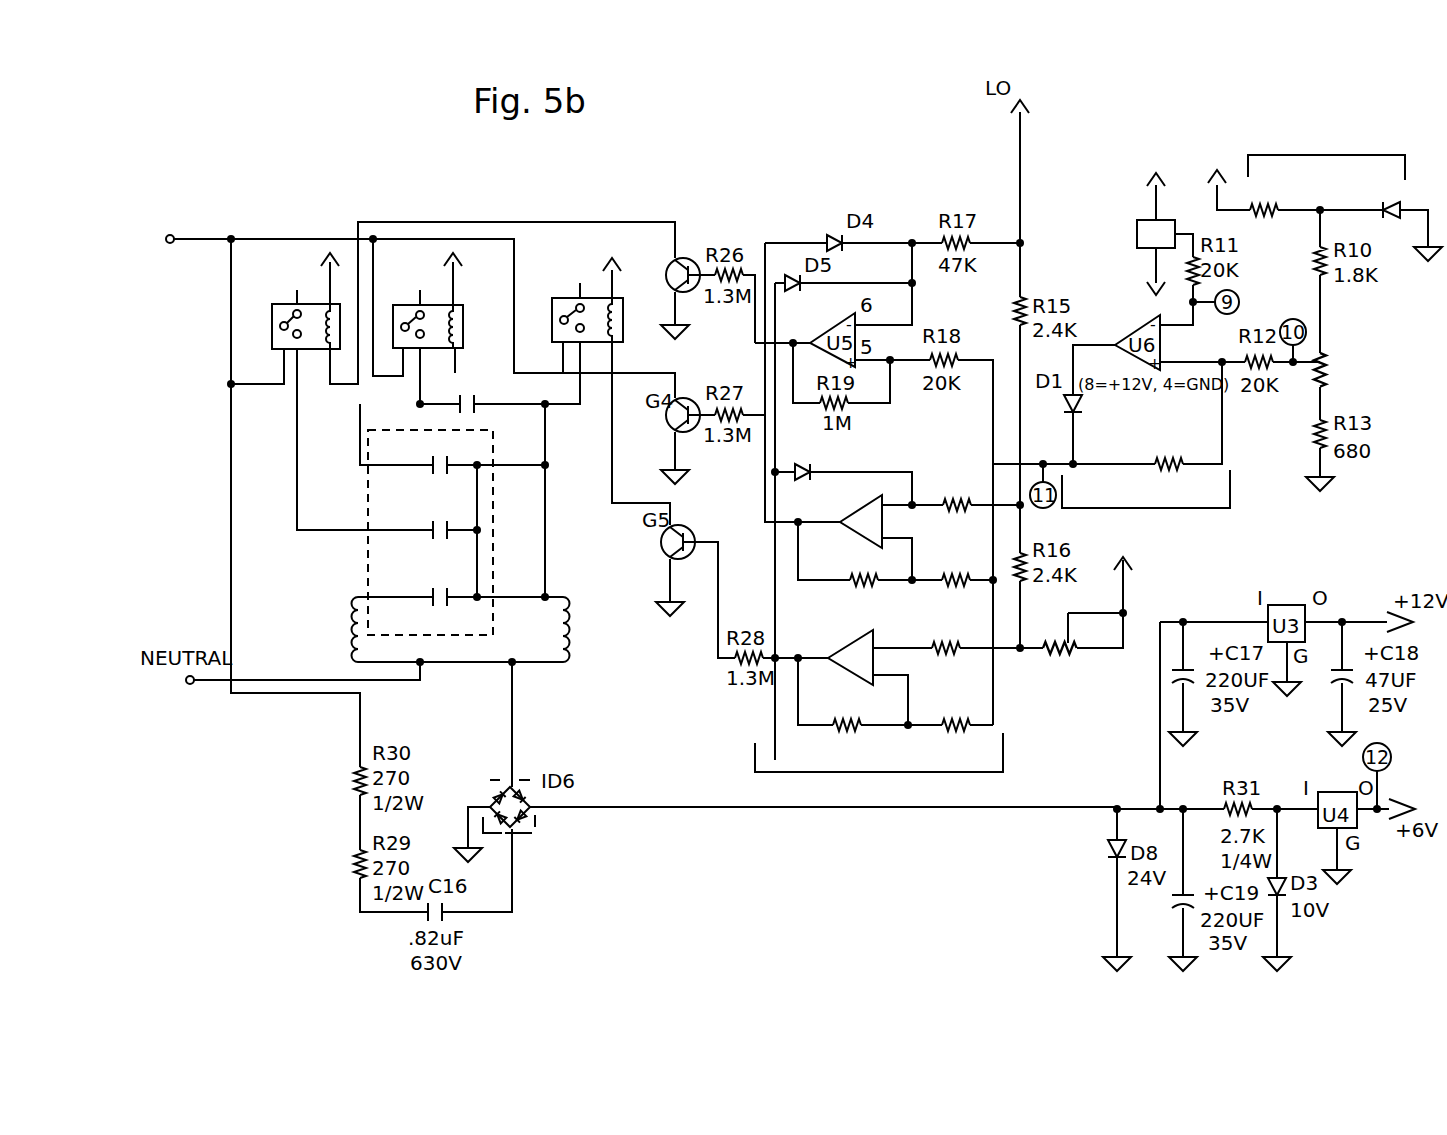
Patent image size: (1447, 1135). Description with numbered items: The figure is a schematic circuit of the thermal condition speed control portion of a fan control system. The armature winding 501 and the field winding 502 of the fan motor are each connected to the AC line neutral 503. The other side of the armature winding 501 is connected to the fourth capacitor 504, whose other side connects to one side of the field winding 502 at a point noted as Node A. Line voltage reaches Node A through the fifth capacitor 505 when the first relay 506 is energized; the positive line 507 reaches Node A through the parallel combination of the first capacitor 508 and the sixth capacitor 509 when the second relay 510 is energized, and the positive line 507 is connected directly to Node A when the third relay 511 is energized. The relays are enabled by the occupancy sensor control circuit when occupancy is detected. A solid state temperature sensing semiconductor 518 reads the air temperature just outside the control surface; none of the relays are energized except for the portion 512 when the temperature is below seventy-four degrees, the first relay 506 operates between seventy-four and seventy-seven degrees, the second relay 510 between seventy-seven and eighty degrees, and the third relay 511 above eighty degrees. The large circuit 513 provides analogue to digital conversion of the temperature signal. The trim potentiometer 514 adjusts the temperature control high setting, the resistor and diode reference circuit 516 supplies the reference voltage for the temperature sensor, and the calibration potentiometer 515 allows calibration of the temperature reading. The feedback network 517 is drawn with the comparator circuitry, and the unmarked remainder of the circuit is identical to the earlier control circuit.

The armature winding 501 is at (343, 598).
The field winding 502 is at (580, 570).
The neutral 503 is at (420, 672).
The capacitor C4 504 is at (417, 563).
The capacitor C5 505 is at (460, 513).
The relay K1 506 is at (272, 330).
The positive 507 is at (212, 238).
The capacitor C1 508 is at (492, 415).
The capacitor C6 509 is at (545, 452).
The relay K2 510 is at (482, 288).
The relay K3 511 is at (623, 317).
The exception element 512 is at (687, 258).
The analogue to digital conversion circuit 513 is at (875, 772).
The trim potentiometer 514 is at (1103, 648).
The potentiometer VR3 515 is at (1347, 338).
The reference voltage circuit R9 and D2 516 is at (1333, 155).
The feedback resistor network R14 517 is at (1203, 508).
The temperature sensing semiconductor 518 is at (1148, 218).